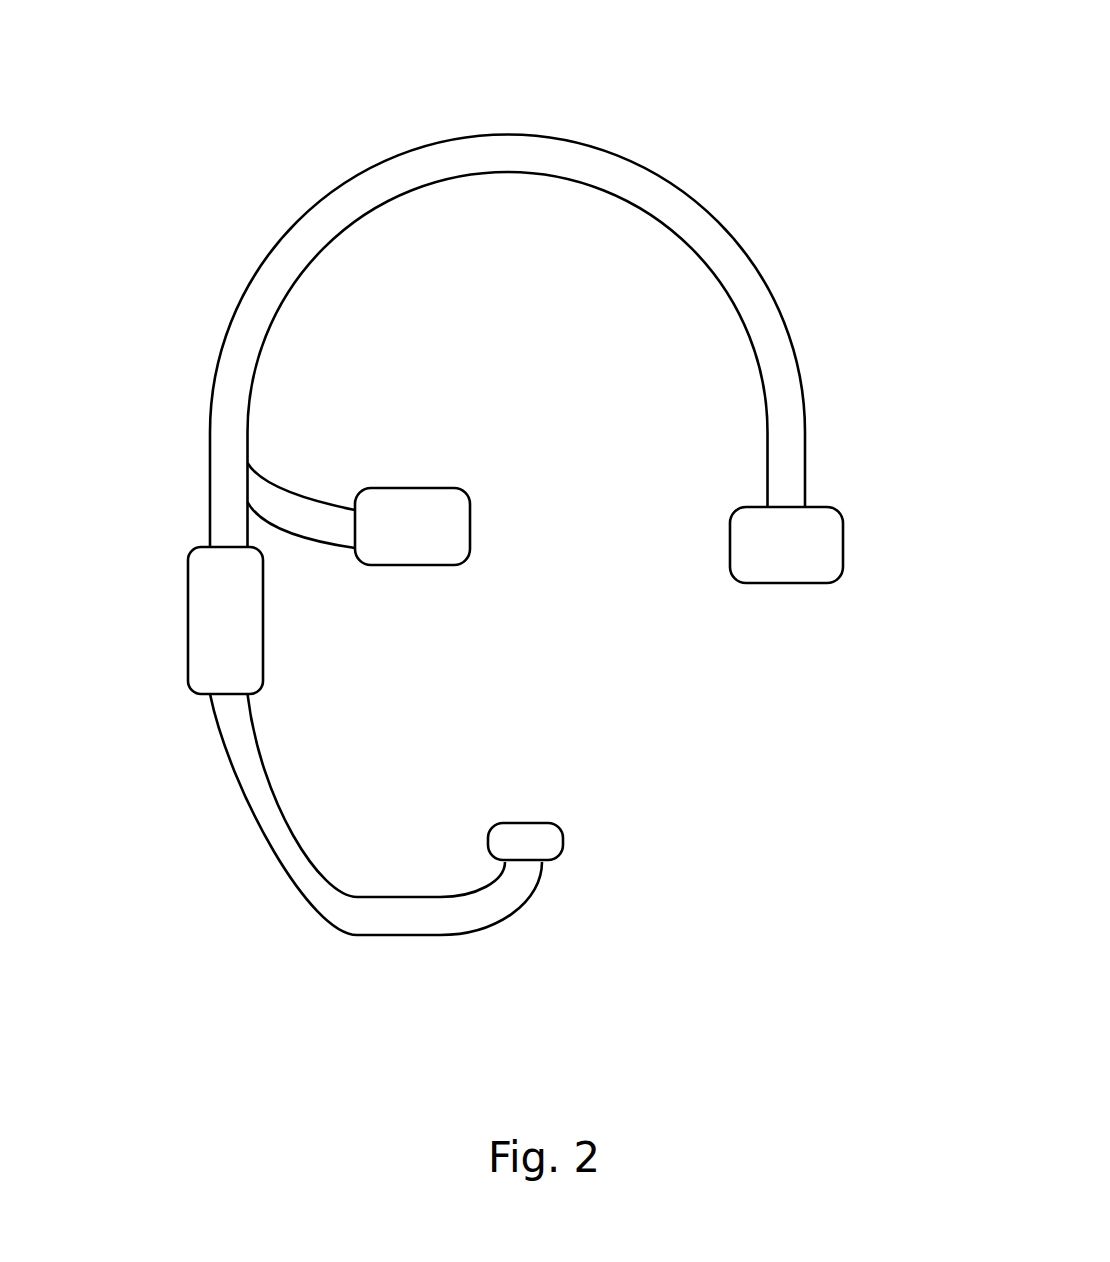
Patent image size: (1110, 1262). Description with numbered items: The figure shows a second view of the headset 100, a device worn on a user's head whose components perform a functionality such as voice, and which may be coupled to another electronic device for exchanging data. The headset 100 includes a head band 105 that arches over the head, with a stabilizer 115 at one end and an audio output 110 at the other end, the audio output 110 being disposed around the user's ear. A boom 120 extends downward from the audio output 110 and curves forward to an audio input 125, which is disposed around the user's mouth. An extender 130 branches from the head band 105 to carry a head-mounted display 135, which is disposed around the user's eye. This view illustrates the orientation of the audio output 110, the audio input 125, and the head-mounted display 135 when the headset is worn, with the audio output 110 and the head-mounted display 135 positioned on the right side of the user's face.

The headset 100 is at (917, 97).
The head band 105 is at (507, 135).
The audio output 110 is at (188, 619).
The stabilizer 115 is at (787, 583).
The boom 120 is at (395, 935).
The audio input 125 is at (525, 823).
The extender 130 is at (320, 507).
The head-mounted display 135 is at (472, 527).